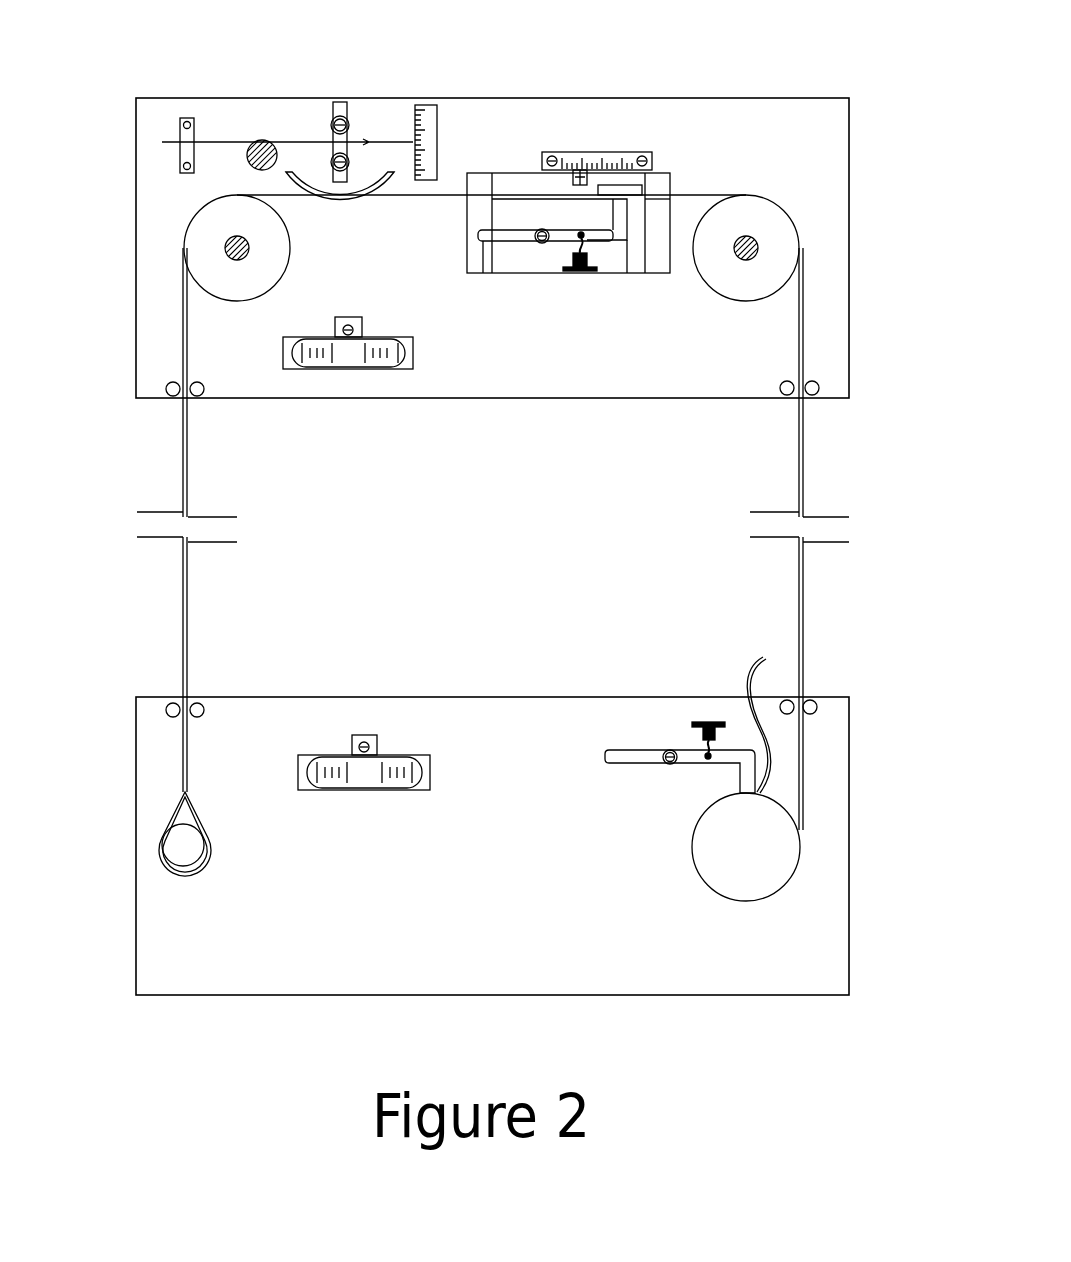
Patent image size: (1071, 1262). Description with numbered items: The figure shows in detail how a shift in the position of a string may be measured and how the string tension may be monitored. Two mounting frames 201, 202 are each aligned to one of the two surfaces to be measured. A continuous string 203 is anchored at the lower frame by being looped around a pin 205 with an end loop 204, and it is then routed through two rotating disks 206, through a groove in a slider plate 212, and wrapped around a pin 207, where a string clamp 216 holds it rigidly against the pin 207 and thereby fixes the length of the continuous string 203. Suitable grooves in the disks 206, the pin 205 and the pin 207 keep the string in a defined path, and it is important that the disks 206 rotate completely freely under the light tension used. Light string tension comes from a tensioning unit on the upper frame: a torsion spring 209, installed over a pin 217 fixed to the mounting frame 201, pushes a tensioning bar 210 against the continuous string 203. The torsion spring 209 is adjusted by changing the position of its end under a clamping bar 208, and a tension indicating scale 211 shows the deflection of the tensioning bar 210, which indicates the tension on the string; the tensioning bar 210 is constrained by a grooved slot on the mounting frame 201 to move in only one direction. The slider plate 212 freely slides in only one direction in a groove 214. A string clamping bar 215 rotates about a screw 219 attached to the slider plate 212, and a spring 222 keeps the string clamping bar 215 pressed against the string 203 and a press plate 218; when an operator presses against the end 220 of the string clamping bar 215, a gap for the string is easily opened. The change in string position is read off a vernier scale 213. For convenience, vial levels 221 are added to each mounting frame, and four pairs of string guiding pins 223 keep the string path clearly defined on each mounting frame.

The mounting frame 201 is at (745, 98).
The mounting frame 202 is at (723, 995).
The continuous string 203 is at (699, 188).
The end loop 204 is at (170, 822).
The pin 205 is at (172, 860).
The rotating disks 206 is at (185, 228).
The pin 207 is at (803, 866).
The clamping bar 208 is at (188, 118).
The torsion spring 209 is at (227, 140).
The tensioning bar 210 is at (340, 102).
The tension indicating scale 211 is at (426, 105).
The slider plate 212 is at (502, 185).
The vernier scale 213 is at (565, 152).
The groove 214 is at (672, 213).
The string clamping bar 215 is at (622, 245).
The string clamp 216 is at (627, 748).
The pin 217 is at (265, 145).
The press plate 218 is at (642, 187).
The screw 219 is at (543, 273).
The end 220 is at (483, 273).
The vial levels 221 is at (343, 370).
The spring 222 is at (568, 258).
The string guiding pins 223 is at (172, 402).